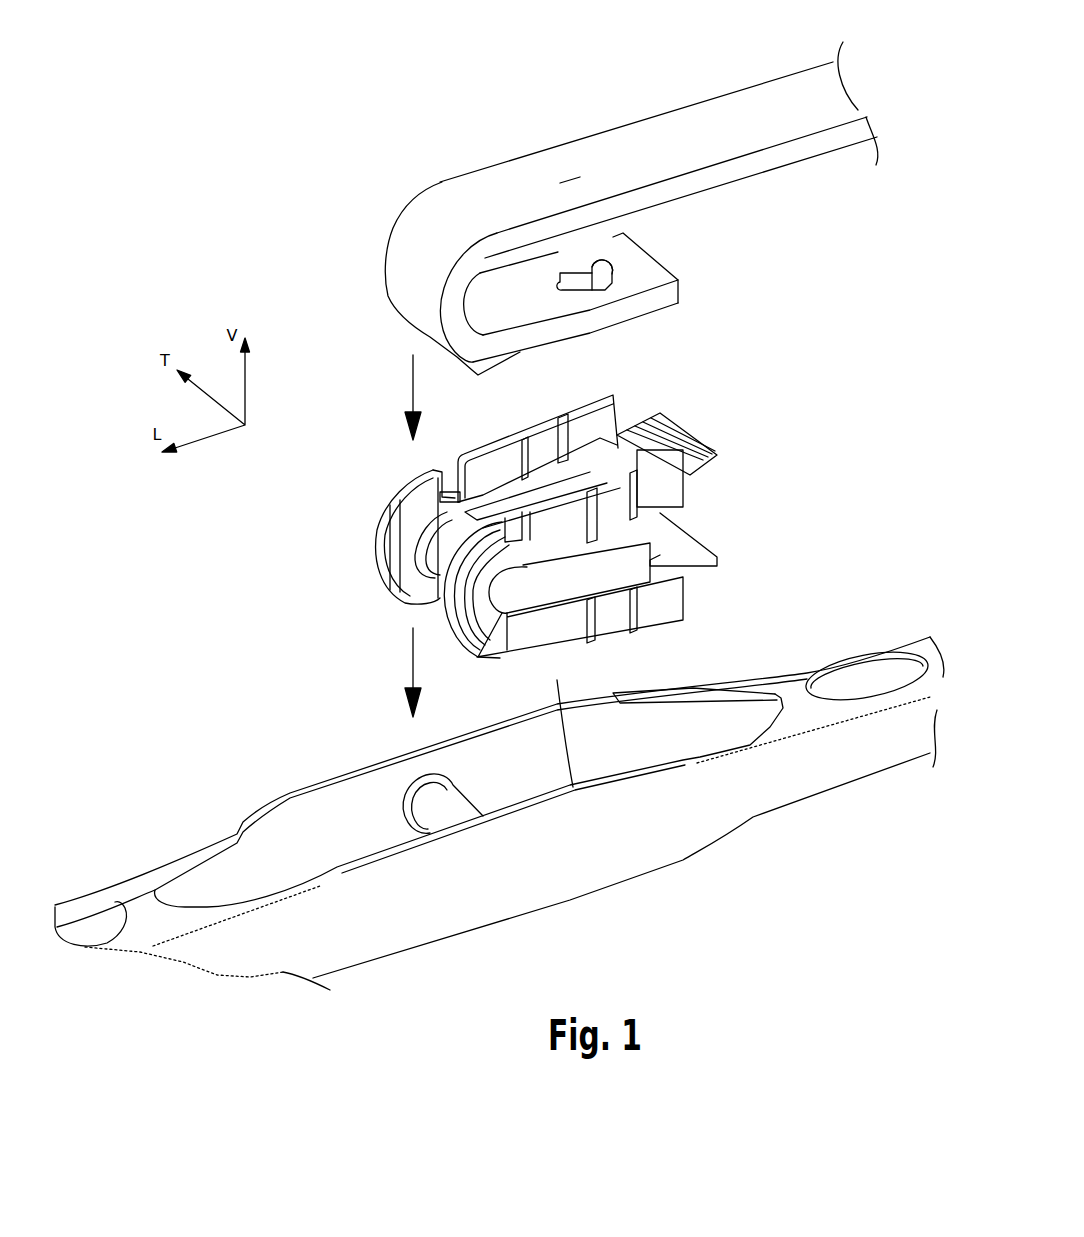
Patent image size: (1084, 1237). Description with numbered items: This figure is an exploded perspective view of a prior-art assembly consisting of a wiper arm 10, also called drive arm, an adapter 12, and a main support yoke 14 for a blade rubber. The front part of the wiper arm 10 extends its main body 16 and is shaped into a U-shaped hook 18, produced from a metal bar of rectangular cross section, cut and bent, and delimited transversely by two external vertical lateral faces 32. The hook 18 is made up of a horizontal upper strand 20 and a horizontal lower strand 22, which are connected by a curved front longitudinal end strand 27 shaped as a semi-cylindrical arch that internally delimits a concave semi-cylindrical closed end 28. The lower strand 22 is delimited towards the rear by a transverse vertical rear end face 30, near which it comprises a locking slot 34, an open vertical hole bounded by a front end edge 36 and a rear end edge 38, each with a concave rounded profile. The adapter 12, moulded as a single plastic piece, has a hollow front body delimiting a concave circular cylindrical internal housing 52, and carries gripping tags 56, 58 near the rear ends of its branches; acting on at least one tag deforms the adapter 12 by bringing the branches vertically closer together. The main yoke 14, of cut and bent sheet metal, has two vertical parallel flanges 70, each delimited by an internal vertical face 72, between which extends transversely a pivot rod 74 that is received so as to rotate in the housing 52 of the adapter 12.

The wiper arm 10 is at (778, 98).
The adapter 12 is at (586, 534).
The main support yoke 14 is at (499, 833).
The main body 16 is at (723, 123).
The U-shaped hook 18 is at (548, 270).
The horizontal upper strand 20 is at (569, 175).
The horizontal lower strand 22 is at (510, 306).
The curved front longitudinal end strand 27 is at (416, 236).
The concave semi-cylindrical closed end 28 is at (472, 323).
The rear end face 30 is at (626, 258).
The external vertical lateral faces 32 is at (823, 146).
The locking slot 34 is at (580, 268).
The front end edge 36 is at (570, 290).
The rear end edge 38 is at (614, 280).
The internal housing 52 is at (478, 657).
The gripping tag 56 is at (667, 422).
The gripping tag 58 is at (690, 540).
The flanges 70 is at (367, 832).
The internal vertical face 72 is at (512, 738).
The pivot rod 74 is at (428, 805).